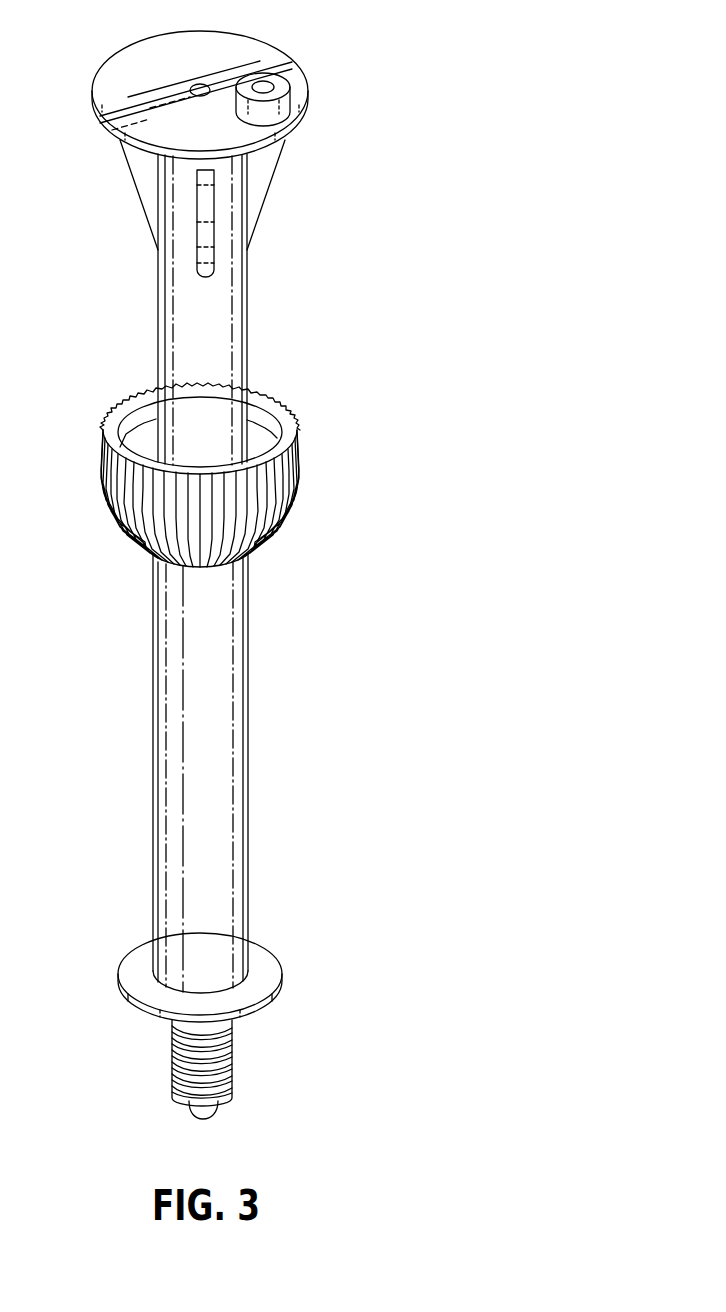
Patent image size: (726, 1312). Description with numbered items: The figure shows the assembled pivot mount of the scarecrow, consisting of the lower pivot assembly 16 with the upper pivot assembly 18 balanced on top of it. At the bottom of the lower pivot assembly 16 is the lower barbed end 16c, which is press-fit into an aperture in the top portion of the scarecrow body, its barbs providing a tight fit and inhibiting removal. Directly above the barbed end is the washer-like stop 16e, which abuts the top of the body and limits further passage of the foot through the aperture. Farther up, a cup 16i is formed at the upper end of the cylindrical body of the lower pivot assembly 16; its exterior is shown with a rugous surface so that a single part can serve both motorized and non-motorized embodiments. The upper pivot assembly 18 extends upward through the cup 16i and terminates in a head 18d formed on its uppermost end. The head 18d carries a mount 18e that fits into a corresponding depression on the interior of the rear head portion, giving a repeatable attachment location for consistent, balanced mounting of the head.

The lower pivot assembly 16 is at (180, 751).
The lower barbed end 16c is at (172, 1058).
The stop 16e is at (265, 960).
The cup 16i is at (112, 510).
The upper pivot assembly 18 is at (244, 232).
The head 18d is at (122, 80).
The mount 18e is at (277, 77).